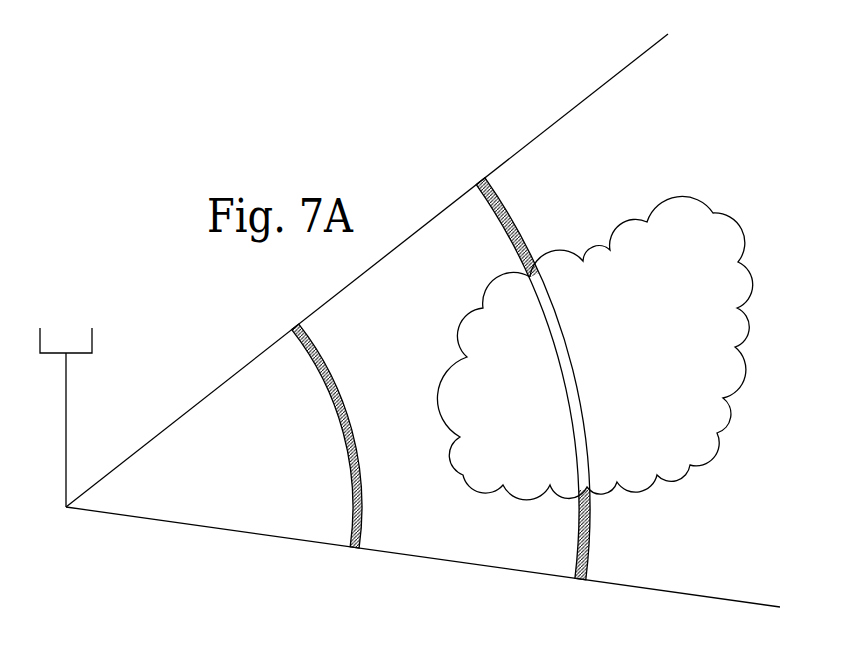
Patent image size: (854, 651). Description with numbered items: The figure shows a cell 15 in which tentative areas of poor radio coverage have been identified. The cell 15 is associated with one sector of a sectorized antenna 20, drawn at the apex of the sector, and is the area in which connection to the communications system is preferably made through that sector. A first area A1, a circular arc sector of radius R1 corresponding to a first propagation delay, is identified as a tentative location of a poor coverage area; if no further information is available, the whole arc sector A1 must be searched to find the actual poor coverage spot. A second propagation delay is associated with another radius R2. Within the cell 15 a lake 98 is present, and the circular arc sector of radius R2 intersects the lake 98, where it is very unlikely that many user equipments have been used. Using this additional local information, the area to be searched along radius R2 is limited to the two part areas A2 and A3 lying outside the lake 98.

The cell 15 is at (212, 411).
The antenna 20 is at (66, 443).
The lake 98 is at (713, 213).
The first area A1 is at (343, 434).
The part area A2 is at (510, 226).
The part area A3 is at (591, 528).
The radius R1 is at (327, 453).
The radius R2 is at (536, 399).